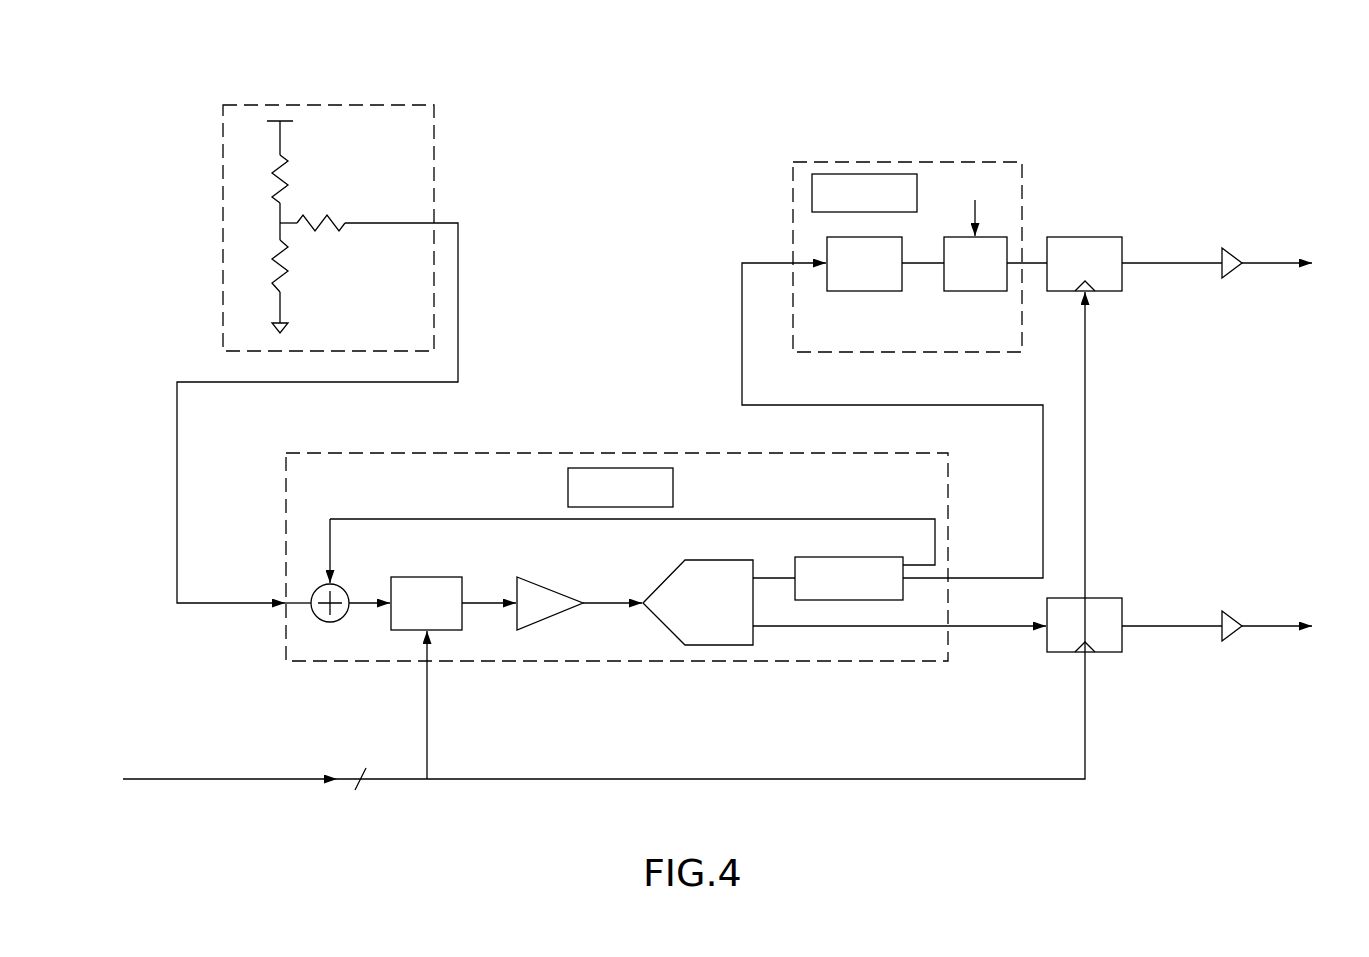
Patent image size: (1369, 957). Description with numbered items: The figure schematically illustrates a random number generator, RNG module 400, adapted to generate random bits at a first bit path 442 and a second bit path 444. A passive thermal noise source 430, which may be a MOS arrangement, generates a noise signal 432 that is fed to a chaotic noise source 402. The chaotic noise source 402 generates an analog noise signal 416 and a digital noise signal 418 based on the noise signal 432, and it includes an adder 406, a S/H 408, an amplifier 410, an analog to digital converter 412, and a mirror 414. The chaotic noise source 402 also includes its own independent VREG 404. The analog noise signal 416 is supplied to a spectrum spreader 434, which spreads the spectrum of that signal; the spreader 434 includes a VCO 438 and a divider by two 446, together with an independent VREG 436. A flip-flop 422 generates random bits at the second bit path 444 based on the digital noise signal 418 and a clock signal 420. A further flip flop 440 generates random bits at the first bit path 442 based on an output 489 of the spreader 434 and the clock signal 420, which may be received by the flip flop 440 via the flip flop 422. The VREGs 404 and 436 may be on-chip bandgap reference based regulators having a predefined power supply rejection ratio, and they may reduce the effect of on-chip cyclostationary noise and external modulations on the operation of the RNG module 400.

The RNG module 400 is at (1240, 793).
The chaotic noise source 402 is at (350, 665).
The VREG 404 is at (673, 490).
The adder 406 is at (345, 588).
The S/H 408 is at (415, 577).
The amplifier 410 is at (552, 588).
The analog to digital converter 412 is at (718, 560).
The mirror 414 is at (830, 557).
The analog noise signal 416 is at (1043, 528).
The digital noise signal 418 is at (1015, 628).
The clock signal 420 is at (630, 779).
The flip-flop 422 is at (1098, 598).
The passive thermal noise source 430 is at (330, 105).
The noise signal 432 is at (445, 222).
The spectrum spreader 434 is at (970, 160).
The VREG 436 is at (857, 174).
The VCO 438 is at (858, 291).
The flip flop 440 is at (1088, 236).
The first bit path 442 is at (1258, 262).
The second bit path 444 is at (1260, 626).
The divider by two 446 is at (968, 291).
The output of spreader 489 is at (1030, 262).